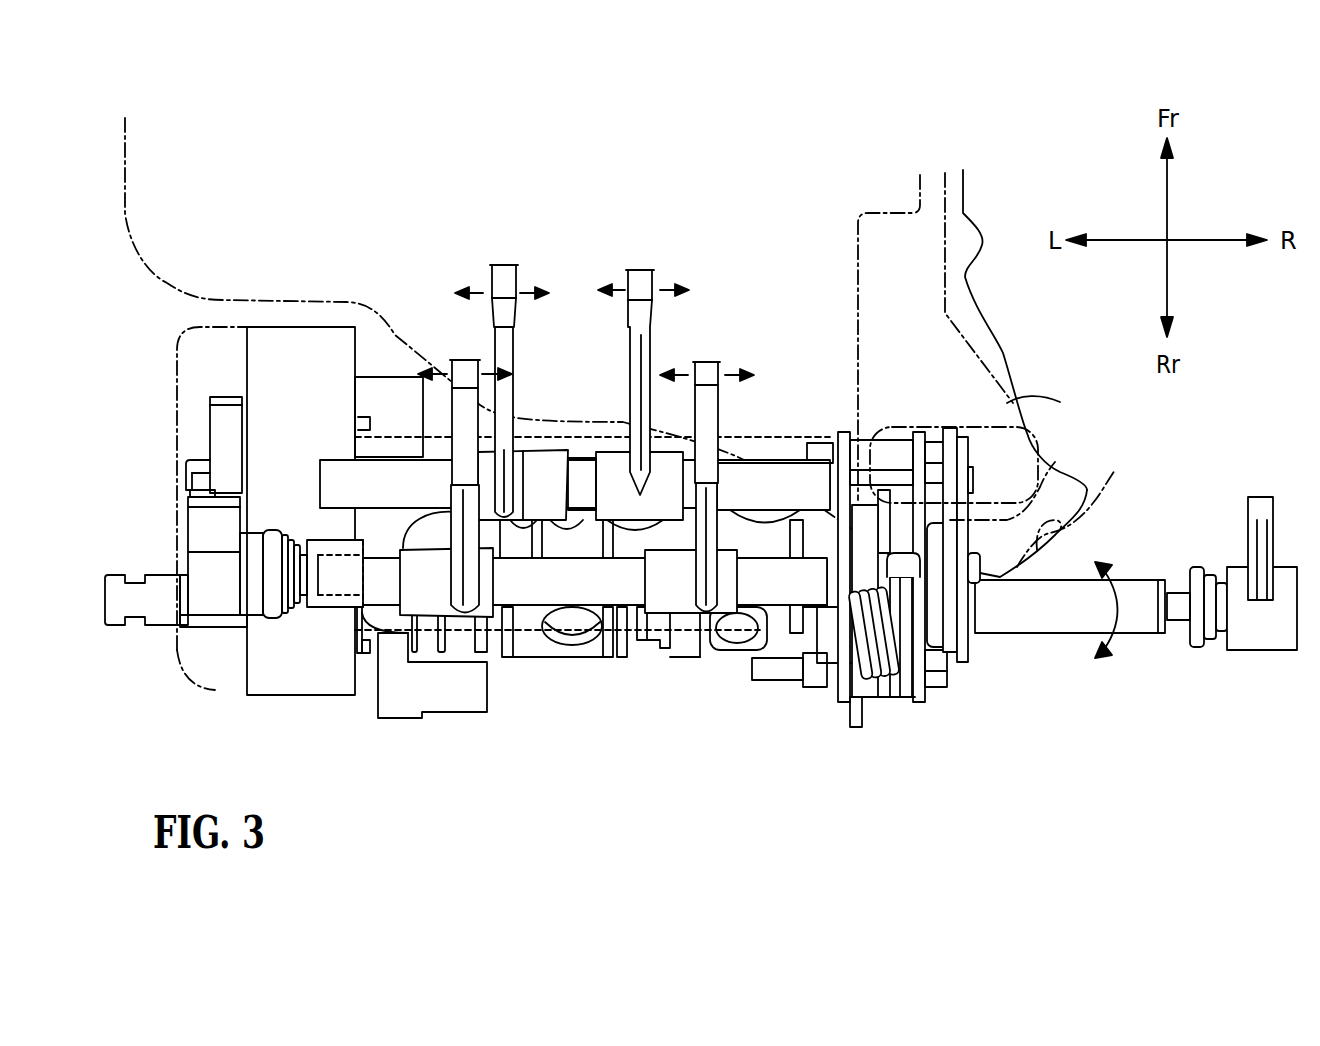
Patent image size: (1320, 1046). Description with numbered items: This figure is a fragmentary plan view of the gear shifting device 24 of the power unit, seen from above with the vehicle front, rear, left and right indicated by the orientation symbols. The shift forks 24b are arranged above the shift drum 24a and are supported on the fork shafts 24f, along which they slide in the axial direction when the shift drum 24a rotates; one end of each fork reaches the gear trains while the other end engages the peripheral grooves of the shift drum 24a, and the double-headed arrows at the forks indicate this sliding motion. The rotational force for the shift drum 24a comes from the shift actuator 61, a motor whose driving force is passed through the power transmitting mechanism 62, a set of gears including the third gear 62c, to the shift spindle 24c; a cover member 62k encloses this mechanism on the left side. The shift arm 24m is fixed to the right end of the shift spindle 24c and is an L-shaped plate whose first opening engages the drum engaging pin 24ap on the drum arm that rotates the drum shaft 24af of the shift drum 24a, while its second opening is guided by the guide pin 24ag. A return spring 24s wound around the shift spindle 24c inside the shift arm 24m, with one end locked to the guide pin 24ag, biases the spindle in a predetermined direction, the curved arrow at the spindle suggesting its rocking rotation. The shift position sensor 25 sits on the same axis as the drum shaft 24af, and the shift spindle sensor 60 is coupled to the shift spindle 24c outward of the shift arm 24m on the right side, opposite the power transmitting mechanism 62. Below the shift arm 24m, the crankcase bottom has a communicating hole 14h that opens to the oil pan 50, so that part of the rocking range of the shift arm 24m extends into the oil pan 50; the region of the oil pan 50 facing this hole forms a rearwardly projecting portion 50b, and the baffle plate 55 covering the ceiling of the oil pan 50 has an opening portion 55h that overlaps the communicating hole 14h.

The gear shifting device 24 is at (375, 222).
The shift drum 24a is at (547, 650).
The shift forks 24b is at (478, 412).
The shift spindle 24c is at (213, 625).
The fork shafts 24f is at (583, 480).
The drum shaft 24af is at (316, 540).
The guide pin 24ag is at (974, 483).
The drum engaging pin 24ap is at (1087, 490).
The return spring 24s is at (950, 430).
The shift arm 24m is at (963, 662).
The shift position sensor 25 is at (208, 575).
The oil pan 50 is at (992, 218).
The projecting portion 50b is at (1060, 528).
The baffle plate 55 is at (1030, 455).
The opening portion 55h is at (913, 427).
The communicating hole 14h is at (1007, 403).
The shift spindle sensor 60 is at (1262, 650).
The shift actuator 61 is at (545, 437).
The power transmitting mechanism 62 is at (195, 408).
The third gear 62c is at (228, 410).
The cover member 62k is at (180, 655).